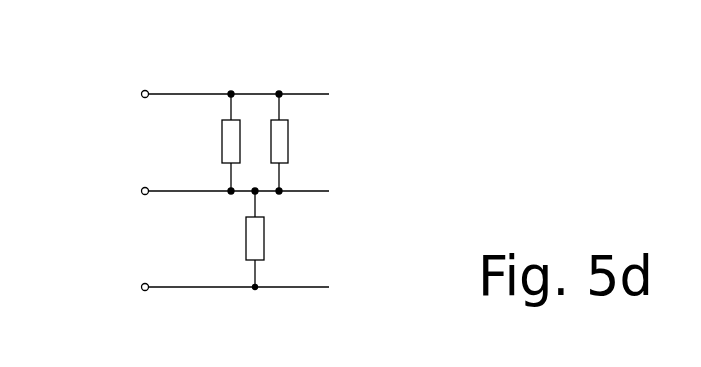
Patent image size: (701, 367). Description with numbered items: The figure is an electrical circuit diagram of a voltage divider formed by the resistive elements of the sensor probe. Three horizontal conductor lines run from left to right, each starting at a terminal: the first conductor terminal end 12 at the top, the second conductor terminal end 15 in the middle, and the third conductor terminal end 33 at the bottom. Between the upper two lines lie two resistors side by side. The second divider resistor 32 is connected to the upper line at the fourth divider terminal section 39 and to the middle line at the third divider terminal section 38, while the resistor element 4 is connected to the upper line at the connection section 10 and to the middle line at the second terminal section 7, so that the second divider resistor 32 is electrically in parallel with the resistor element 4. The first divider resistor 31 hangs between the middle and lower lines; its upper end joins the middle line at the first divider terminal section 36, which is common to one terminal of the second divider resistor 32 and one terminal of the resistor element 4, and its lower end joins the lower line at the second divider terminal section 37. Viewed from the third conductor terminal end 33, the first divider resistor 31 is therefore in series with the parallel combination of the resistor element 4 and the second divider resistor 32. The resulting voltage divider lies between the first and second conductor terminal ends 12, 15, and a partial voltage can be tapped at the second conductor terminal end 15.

The first conductor terminal end 12 is at (140, 97).
The second conductor terminal end 15 is at (140, 193).
The third conductor terminal end 33 is at (140, 290).
The second divider resistor 32 is at (227, 137).
The resistor element 4 is at (283, 142).
The first divider resistor 31 is at (260, 245).
The fourth divider terminal section 39 is at (230, 92).
The connection section 10 is at (280, 92).
The third divider terminal section 38 is at (230, 194).
The first divider terminal section 36 is at (257, 192).
The second terminal section 7 is at (281, 190).
The second divider terminal section 37 is at (258, 290).